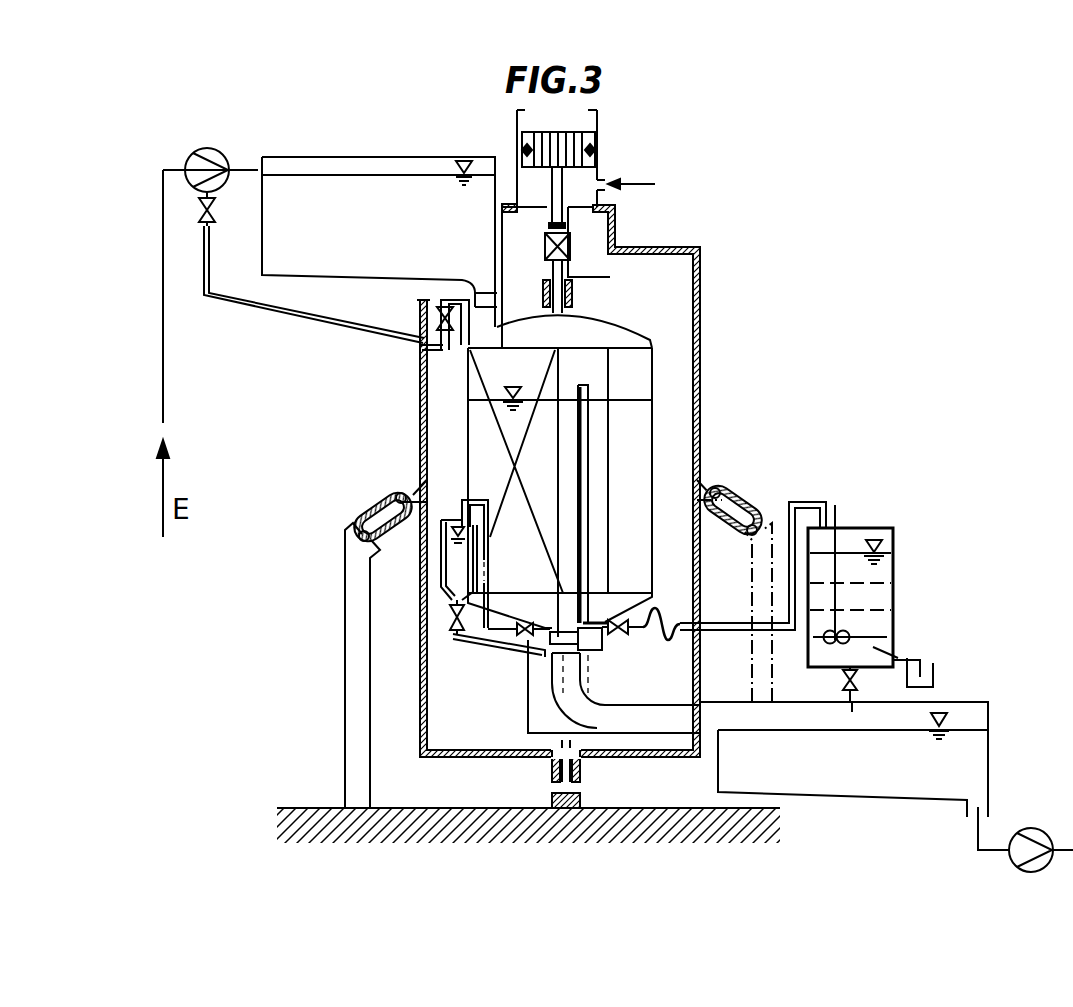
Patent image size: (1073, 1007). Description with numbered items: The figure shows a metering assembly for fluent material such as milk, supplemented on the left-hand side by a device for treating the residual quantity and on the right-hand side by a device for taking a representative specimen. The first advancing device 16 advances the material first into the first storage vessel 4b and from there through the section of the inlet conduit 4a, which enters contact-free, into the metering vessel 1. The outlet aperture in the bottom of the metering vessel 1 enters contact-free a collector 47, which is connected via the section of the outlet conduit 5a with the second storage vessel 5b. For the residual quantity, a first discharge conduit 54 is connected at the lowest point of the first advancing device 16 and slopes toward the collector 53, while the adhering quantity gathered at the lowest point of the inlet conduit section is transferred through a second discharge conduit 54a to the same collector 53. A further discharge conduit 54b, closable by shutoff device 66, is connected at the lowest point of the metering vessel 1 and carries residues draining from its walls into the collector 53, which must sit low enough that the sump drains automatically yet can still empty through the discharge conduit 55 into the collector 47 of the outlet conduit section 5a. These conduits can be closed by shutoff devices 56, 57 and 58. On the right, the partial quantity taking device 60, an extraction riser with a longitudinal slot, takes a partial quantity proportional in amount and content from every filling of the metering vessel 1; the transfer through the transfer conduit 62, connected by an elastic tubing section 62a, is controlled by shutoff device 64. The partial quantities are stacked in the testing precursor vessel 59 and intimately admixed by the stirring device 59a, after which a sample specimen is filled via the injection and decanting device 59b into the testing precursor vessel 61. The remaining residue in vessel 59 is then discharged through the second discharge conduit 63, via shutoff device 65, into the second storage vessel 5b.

The metering vessel 1 is at (626, 322).
The section of the inlet conduit 4a is at (483, 290).
The first storage vessel 4b is at (365, 160).
The section of the outlet conduit 5a is at (653, 717).
The second storage vessel 5b is at (900, 760).
The first advancing device 16 is at (193, 148).
The collector 47 is at (540, 658).
The collector 53 is at (450, 560).
The first discharge conduit 54 is at (277, 313).
The second discharge conduit 54a is at (423, 350).
The further discharge conduit 54b is at (468, 498).
The discharge conduit 55 is at (482, 648).
The shutoff device 56 is at (216, 208).
The shutoff device 57 is at (420, 308).
The shutoff device 58 is at (448, 617).
The testing precursor vessel 59 is at (893, 529).
The stirring device 59a is at (837, 512).
The injection and decanting device 59b is at (905, 655).
The partial quantity taking device 60 is at (588, 418).
The testing precursor vessel 61 is at (933, 670).
The transfer conduit 62 is at (808, 500).
The elastic tubing section 62a is at (652, 605).
The second discharge conduit 63 is at (852, 702).
The shutoff device 64 is at (617, 633).
The shutoff device 65 is at (845, 690).
The shutoff device 66 is at (527, 623).